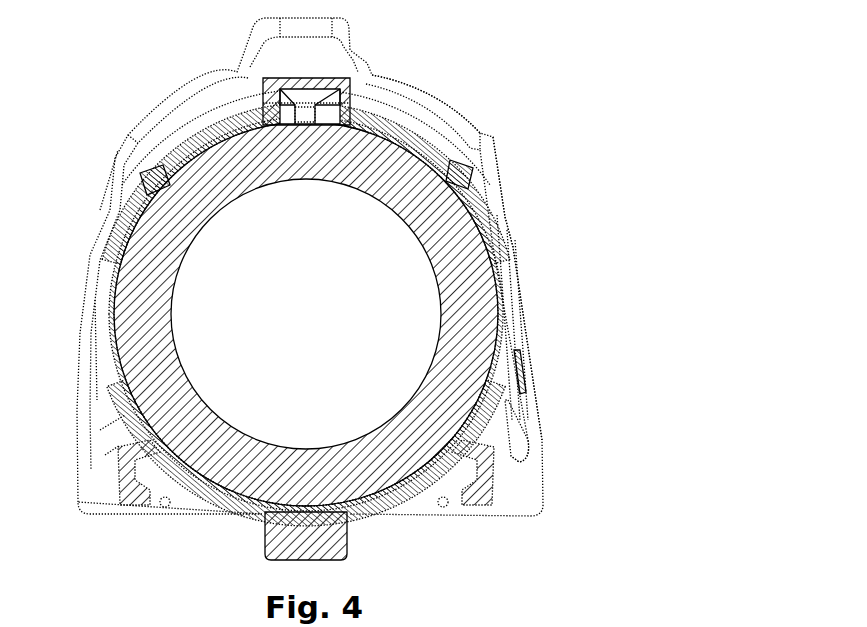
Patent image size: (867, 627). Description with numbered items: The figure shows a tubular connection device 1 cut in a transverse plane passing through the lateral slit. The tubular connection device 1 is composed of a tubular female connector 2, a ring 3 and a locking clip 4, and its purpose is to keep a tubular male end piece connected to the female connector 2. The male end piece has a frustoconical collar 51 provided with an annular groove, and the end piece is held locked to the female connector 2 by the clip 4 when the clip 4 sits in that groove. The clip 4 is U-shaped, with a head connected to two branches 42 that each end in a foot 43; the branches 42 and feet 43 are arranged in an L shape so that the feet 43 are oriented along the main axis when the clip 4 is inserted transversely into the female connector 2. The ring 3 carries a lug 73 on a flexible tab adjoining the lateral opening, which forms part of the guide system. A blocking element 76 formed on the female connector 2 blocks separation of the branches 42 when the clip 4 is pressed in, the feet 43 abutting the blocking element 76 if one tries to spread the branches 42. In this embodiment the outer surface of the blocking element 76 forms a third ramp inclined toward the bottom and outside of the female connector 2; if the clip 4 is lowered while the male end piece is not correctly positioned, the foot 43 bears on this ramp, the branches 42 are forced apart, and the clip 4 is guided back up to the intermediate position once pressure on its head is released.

The tubular connection device 1 is at (530, 127).
The tubular female connector 2 is at (532, 354).
The ring 3 is at (383, 510).
The locking clip 4 is at (467, 93).
The branches 42 is at (505, 298).
The foot 43 is at (532, 458).
The frustoconical collar 51 is at (403, 437).
The lug 73 is at (493, 413).
The blocking element 76 is at (517, 492).